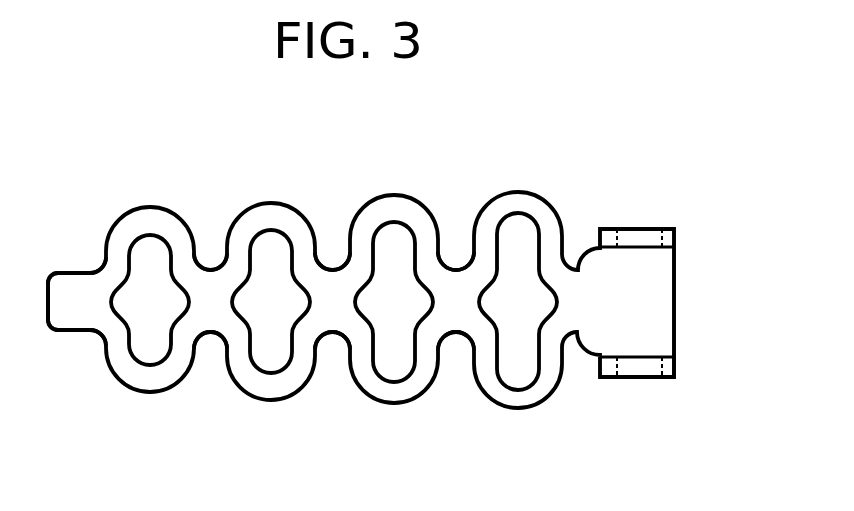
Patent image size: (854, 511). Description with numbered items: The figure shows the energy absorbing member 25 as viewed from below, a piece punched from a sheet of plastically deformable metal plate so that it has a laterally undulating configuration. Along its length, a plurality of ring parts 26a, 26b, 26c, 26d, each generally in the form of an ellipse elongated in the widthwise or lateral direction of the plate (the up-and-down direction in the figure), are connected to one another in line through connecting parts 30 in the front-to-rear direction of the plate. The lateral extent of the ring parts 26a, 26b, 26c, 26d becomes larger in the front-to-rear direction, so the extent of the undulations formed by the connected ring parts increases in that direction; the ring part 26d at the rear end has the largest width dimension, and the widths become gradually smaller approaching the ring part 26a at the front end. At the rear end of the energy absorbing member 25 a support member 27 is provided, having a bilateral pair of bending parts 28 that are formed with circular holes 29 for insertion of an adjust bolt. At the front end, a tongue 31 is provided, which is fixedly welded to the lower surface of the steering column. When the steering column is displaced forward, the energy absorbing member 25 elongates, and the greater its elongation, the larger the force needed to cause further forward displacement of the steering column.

The energy absorbing member 25 is at (594, 189).
The ring part 26a is at (147, 211).
The ring part 26b is at (271, 395).
The ring part 26c is at (397, 398).
The ring part 26d is at (542, 398).
The support member 27 is at (660, 304).
The bending part 28 is at (675, 238).
The circular hole 29 is at (622, 238).
The connecting part 30 is at (207, 284).
The tongue 31 is at (67, 320).